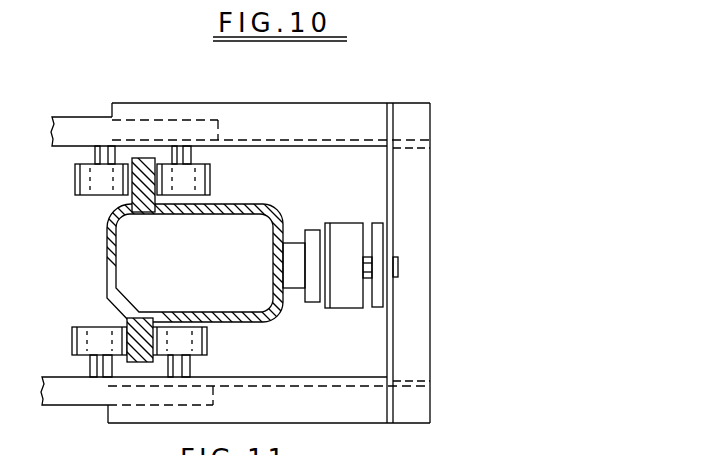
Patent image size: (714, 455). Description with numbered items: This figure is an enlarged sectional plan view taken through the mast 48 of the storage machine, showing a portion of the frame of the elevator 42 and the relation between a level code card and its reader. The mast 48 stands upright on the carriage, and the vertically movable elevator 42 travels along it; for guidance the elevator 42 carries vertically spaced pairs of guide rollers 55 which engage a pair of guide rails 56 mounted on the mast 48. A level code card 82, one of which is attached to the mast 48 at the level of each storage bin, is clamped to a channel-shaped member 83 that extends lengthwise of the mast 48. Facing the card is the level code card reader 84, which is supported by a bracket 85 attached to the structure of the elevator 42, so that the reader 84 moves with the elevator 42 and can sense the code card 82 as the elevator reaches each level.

The elevator 42 is at (78, 412).
The mast 48 is at (107, 267).
The guide rollers 55 is at (210, 182).
The guide rails 56 is at (137, 185).
The level code card 82 is at (314, 226).
The channel-shaped member 83 is at (290, 233).
The level code card reader 84 is at (349, 222).
The bracket 85 is at (358, 415).